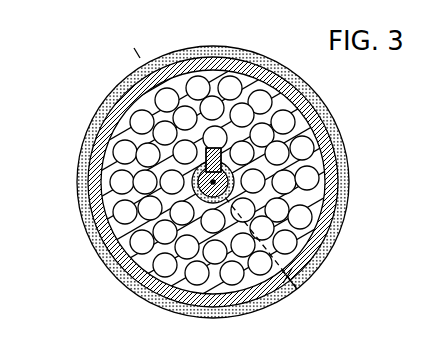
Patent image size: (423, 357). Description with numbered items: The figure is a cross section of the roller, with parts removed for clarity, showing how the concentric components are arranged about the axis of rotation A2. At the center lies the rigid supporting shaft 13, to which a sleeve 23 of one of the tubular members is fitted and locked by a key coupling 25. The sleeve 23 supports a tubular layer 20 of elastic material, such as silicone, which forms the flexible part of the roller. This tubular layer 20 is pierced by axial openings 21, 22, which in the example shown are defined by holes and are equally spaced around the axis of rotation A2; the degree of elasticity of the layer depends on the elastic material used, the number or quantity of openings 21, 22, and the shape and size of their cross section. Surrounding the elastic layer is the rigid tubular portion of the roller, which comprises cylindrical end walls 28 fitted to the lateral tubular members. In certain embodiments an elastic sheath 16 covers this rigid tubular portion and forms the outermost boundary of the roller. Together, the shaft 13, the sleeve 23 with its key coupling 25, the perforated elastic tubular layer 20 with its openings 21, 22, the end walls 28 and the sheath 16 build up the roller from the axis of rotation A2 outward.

The elastic sheath 16 is at (80, 173).
The cylindrical end wall 28 is at (145, 68).
The tubular layer 20 is at (212, 77).
The rigid supporting shaft 13 is at (100, 249).
The axial opening 22 is at (143, 121).
The axial opening 21 is at (176, 156).
The key coupling 25 is at (208, 150).
The sleeve 23 is at (233, 184).
The axis of rotation A2 is at (300, 291).